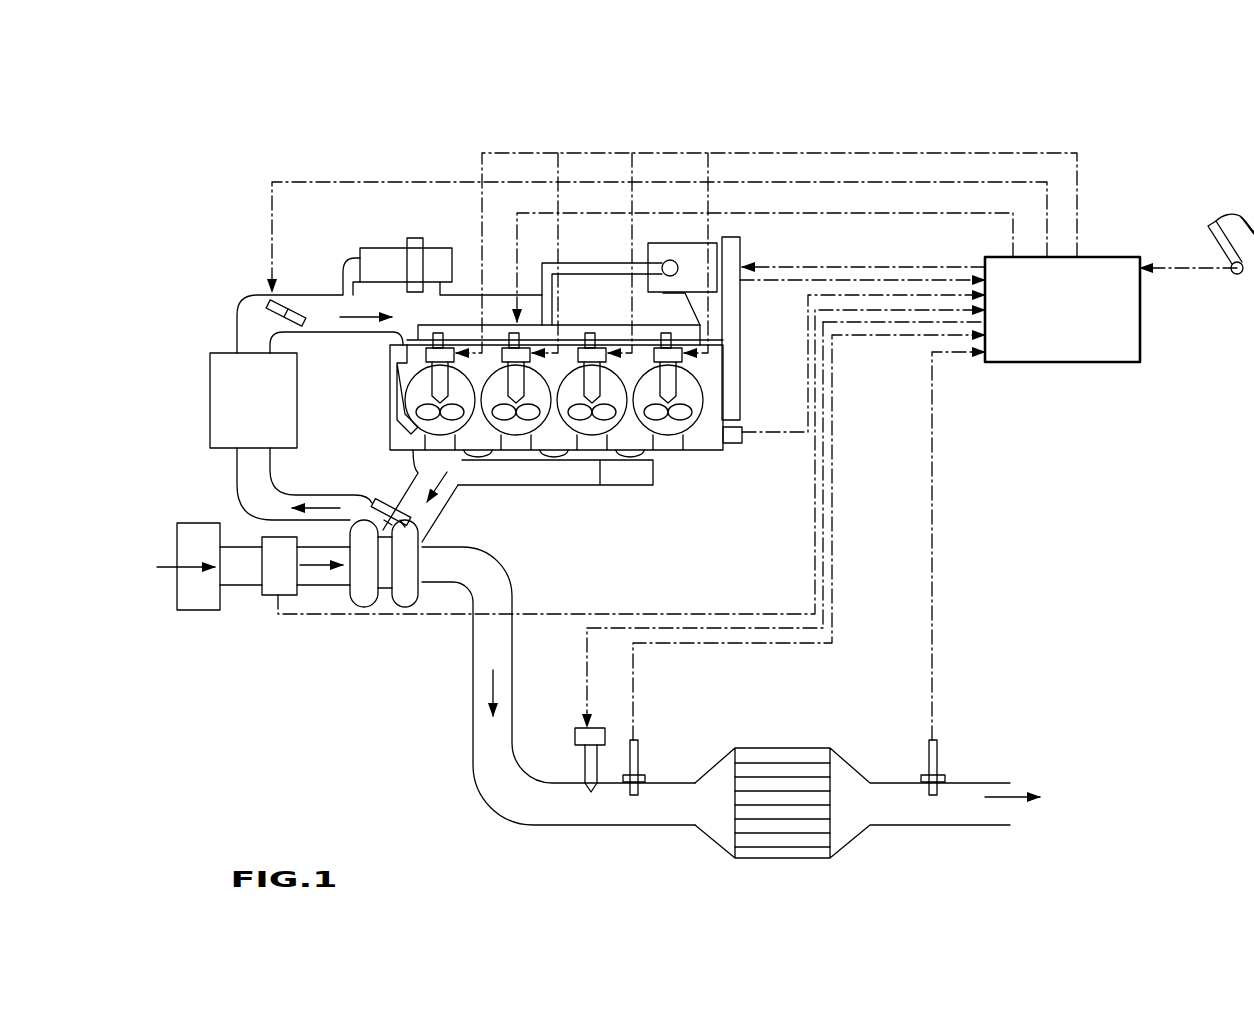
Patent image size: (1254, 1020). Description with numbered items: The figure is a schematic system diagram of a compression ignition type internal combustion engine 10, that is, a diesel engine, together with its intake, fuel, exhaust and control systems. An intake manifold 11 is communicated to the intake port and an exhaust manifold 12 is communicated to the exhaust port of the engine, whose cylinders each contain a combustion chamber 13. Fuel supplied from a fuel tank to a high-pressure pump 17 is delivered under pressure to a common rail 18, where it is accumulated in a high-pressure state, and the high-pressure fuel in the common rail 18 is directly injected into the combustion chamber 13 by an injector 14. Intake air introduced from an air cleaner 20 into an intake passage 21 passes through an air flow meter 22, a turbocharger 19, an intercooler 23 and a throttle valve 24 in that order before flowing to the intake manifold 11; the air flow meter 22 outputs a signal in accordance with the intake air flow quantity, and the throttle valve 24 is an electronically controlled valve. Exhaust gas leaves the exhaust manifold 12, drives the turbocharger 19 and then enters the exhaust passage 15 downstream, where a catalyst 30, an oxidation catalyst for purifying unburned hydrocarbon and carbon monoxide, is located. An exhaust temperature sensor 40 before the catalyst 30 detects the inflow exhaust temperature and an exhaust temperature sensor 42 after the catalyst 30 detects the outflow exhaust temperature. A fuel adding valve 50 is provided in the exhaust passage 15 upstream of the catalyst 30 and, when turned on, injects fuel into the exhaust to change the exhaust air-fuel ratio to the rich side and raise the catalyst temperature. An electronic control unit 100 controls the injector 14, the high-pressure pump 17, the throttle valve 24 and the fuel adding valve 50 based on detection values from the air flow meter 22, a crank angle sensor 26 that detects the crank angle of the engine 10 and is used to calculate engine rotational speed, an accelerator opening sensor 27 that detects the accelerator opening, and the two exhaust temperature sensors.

The internal combustion engine 10 is at (797, 133).
The intake manifold 11 is at (490, 292).
The exhaust manifold 12 is at (671, 470).
The combustion chamber 13 is at (687, 393).
The injector 14 is at (668, 375).
The exhaust passage 15 is at (547, 818).
The high-pressure pump 17 is at (673, 243).
The common rail 18 is at (595, 323).
The turbocharger 19 is at (405, 613).
The air cleaner 20 is at (203, 607).
The intake passage 21 is at (237, 557).
The air flow meter 22 is at (275, 587).
The intercooler 23 is at (220, 362).
The throttle valve 24 is at (268, 303).
The crank angle sensor 26 is at (737, 447).
The accelerator opening sensor 27 is at (1238, 275).
The catalyst 30 is at (785, 848).
The exhaust temperature sensor 40 is at (640, 748).
The exhaust temperature sensor 42 is at (938, 748).
The fuel adding valve 50 is at (578, 728).
The electronic control unit 100 is at (1113, 257).